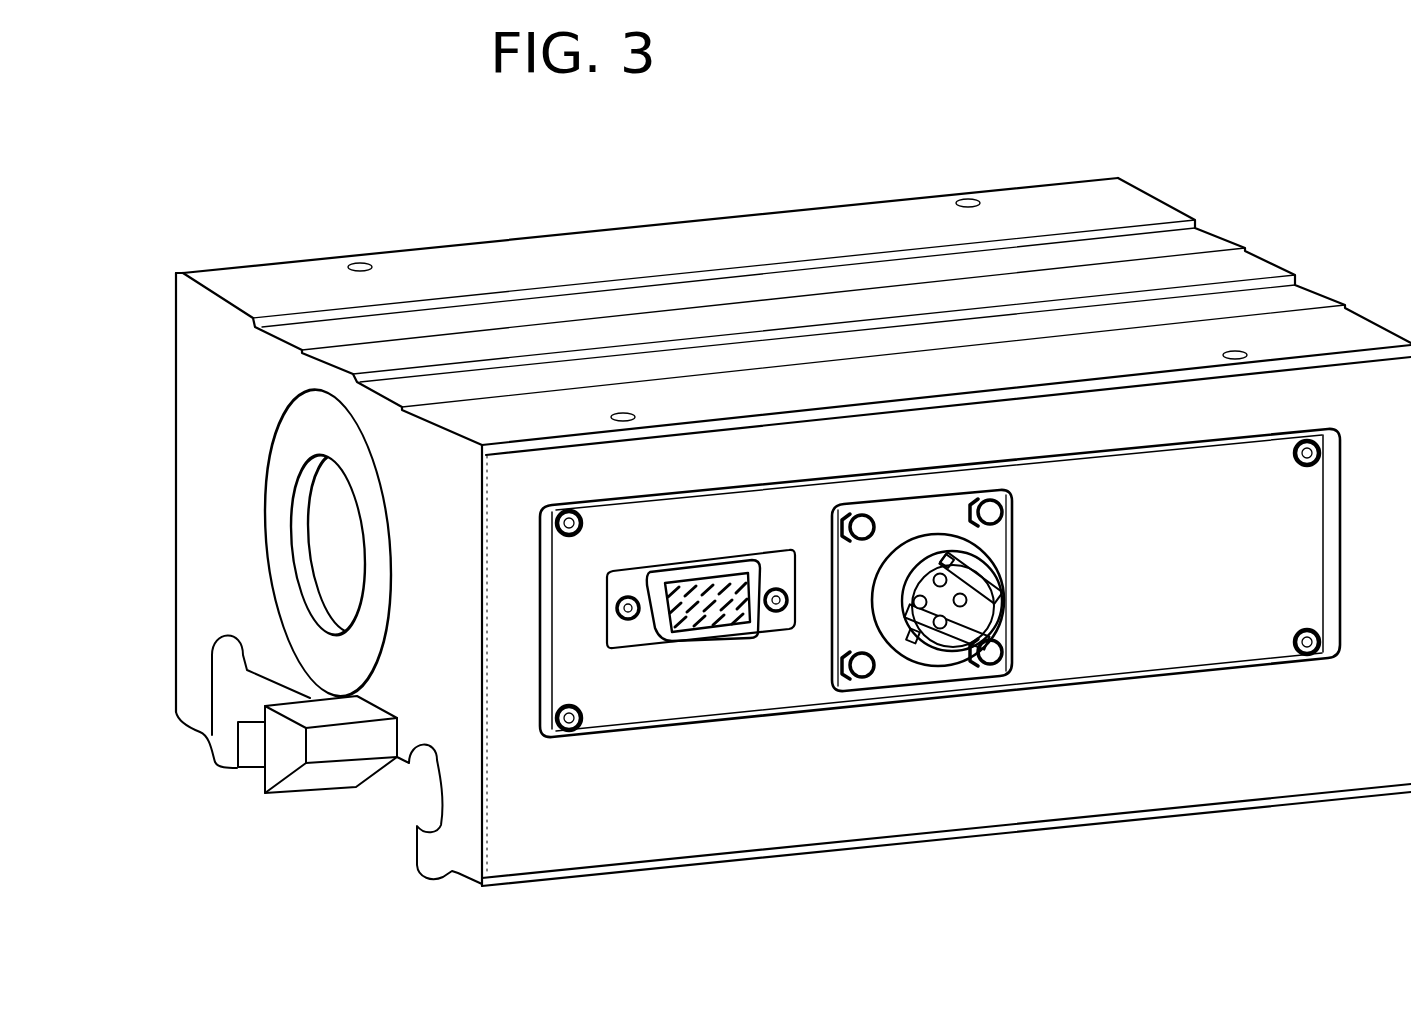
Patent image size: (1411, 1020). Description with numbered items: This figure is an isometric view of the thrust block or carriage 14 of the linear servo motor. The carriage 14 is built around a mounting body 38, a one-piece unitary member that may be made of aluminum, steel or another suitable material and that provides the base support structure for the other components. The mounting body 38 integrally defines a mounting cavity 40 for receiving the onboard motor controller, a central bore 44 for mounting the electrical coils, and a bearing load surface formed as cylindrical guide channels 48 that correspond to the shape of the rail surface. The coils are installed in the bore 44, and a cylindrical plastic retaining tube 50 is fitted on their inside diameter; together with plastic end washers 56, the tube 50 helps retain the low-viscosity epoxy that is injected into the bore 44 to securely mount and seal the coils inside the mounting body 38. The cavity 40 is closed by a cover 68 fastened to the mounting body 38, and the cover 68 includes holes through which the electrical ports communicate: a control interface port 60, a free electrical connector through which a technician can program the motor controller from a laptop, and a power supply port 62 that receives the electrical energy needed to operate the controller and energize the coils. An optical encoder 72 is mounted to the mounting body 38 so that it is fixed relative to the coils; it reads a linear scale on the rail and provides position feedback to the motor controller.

The thrust block or carriage 14 is at (840, 190).
The mounting body 38 is at (1042, 207).
The mounting cavity 40 is at (731, 485).
The bore 44 is at (283, 413).
The plastic end washers 56 is at (282, 488).
The cylindrical plastic retaining tube 50 is at (338, 547).
The cylindrical guide channels 48 is at (240, 682).
The optical encoder 72 is at (348, 743).
The control interface port 60 is at (729, 636).
The power supply port 62 is at (900, 660).
The cover 68 is at (1165, 628).